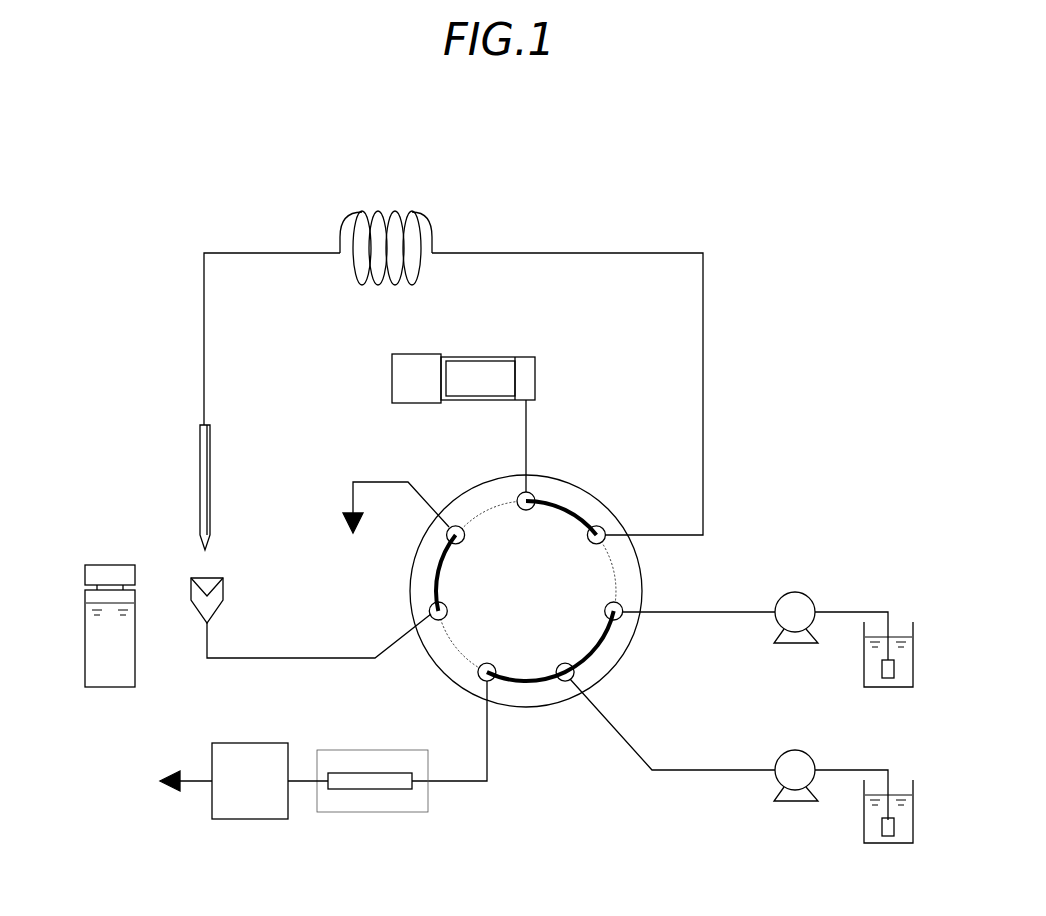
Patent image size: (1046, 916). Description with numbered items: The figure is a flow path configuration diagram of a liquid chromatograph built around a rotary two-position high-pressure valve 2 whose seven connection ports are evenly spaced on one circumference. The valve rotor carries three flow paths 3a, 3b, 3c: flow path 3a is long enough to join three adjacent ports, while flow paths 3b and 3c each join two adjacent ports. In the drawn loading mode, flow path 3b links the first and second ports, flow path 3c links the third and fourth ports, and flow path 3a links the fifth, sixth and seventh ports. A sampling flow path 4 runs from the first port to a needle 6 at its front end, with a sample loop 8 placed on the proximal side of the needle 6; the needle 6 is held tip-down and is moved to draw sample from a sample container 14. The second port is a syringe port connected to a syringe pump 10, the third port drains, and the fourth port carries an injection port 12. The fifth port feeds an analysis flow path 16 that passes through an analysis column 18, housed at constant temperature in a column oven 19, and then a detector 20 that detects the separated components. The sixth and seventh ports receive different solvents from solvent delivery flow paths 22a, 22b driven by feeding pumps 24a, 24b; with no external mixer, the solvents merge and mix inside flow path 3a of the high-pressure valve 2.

The high-pressure valve 2 is at (543, 477).
The flow path 3a is at (597, 655).
The flow path 3b is at (583, 515).
The flow path 3c is at (436, 578).
The sampling flow path 4 is at (503, 253).
The needle 6 is at (211, 470).
The sample loop 8 is at (402, 212).
The syringe pump 10 is at (402, 354).
The injection port 12 is at (224, 593).
The sample container 14 is at (105, 688).
The analysis flow path 16 is at (460, 782).
The analysis column 18 is at (355, 773).
The column oven 19 is at (378, 790).
The detector 20 is at (240, 820).
The solvent delivery flow path 22a is at (672, 770).
The solvent delivery flow path 22b is at (697, 612).
The feeding pump 24a is at (796, 750).
The feeding pump 24b is at (796, 592).